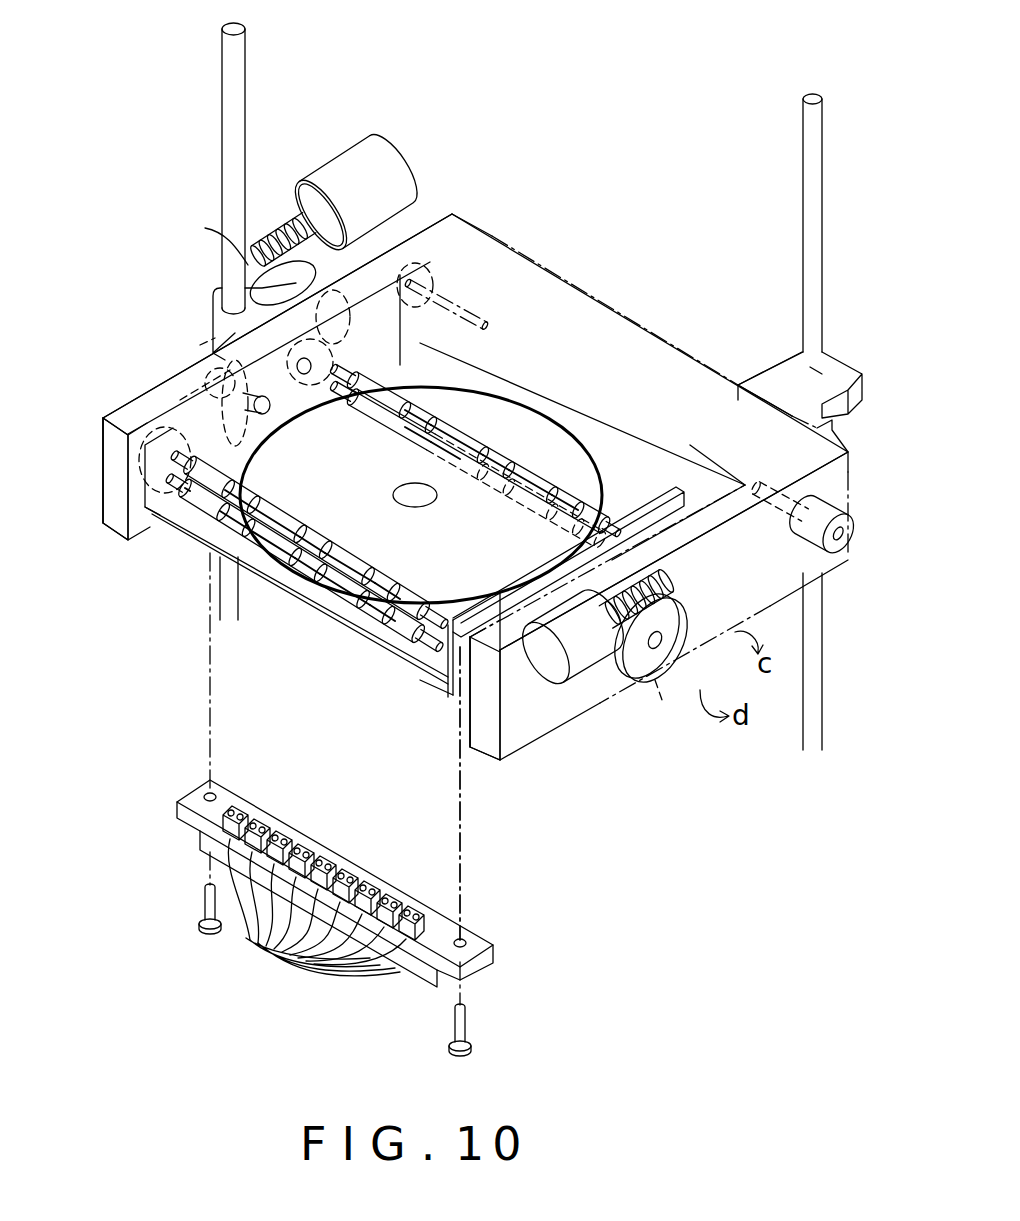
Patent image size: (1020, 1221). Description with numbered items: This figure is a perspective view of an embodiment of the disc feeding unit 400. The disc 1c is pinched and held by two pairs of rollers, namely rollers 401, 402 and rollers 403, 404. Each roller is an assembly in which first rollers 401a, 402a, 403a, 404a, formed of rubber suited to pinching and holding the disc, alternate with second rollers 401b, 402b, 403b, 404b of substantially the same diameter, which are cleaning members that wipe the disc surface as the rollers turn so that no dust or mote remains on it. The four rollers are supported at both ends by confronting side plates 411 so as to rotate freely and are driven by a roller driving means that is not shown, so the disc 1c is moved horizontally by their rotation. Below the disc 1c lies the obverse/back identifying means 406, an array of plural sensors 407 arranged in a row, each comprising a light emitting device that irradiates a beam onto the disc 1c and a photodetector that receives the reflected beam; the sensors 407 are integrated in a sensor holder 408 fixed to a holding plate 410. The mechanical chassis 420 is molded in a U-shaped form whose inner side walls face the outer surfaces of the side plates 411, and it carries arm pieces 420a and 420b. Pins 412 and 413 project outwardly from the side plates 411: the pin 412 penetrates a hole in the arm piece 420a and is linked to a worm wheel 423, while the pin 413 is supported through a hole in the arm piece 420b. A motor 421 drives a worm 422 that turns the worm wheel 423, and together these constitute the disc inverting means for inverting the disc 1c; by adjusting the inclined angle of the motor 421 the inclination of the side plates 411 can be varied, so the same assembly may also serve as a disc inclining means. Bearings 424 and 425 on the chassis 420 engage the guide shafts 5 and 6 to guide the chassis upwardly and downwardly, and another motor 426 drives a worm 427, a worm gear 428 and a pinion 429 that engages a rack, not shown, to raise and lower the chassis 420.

The disk drive unit 400 is at (545, 160).
The disc 1c is at (535, 465).
The guide shaft 5 is at (222, 96).
The guide shaft 6 is at (803, 148).
The roller 401 is at (440, 640).
The first rollers 401a is at (270, 512).
The second rollers 401b is at (300, 540).
The roller 402 is at (365, 665).
The first rollers 402a is at (185, 540).
The second rollers 402b is at (210, 565).
The roller 403 is at (525, 465).
The first rollers 403a is at (425, 287).
The second rollers 403b is at (545, 392).
The roller 404 is at (572, 445).
The first rollers 404a is at (575, 525).
The second rollers 404b is at (455, 442).
The obverse/back identifying means 406 is at (347, 850).
The sensors 407 is at (300, 962).
The sensor holder 408 is at (478, 943).
The holding plate 410 is at (452, 735).
The side plates 411 is at (162, 403).
The pin 412 is at (655, 690).
The pin 413 is at (200, 345).
The mechanical chassis 420 is at (622, 318).
The arm piece 420a is at (545, 712).
The arm piece 420b is at (120, 416).
The motor 421 is at (585, 652).
The worm 422 is at (677, 577).
The worm wheel 423 is at (680, 630).
The bearing 424 is at (215, 305).
The bearing 425 is at (848, 372).
The motor 426 is at (355, 172).
The worm 427 is at (287, 215).
The worm gear 428 is at (252, 272).
The pinion 429 is at (838, 515).